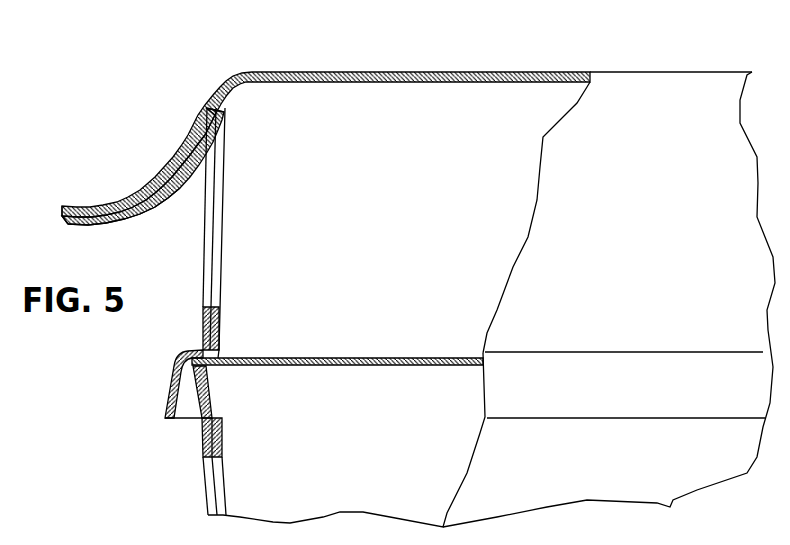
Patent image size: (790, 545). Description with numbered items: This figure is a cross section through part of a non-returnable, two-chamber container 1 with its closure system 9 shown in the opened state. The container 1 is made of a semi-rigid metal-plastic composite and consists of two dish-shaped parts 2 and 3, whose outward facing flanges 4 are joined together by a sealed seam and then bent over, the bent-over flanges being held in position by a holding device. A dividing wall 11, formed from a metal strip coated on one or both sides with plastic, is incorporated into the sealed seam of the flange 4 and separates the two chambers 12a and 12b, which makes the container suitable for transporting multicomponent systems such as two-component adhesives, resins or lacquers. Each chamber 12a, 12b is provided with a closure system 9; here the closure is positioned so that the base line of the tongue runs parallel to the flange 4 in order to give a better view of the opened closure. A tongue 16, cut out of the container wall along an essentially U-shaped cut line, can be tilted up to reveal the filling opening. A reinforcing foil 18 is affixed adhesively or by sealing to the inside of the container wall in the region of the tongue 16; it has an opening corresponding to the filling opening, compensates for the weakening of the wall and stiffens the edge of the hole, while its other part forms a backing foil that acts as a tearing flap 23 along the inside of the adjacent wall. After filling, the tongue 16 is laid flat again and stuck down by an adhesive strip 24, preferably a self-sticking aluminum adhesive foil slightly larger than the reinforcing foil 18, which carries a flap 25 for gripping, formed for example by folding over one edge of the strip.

The non-returnable container 1 is at (229, 64).
The dish-shaped part 2 is at (330, 72).
The dish-shaped part 3 is at (200, 430).
The flange 4 is at (636, 405).
The closure system 9 is at (186, 140).
The dividing wall 11 is at (400, 358).
The chamber 12a is at (462, 108).
The chamber 12b is at (362, 473).
The tongue 16 is at (131, 216).
The reinforcing foil 18 is at (219, 326).
The tearing flap 23 is at (200, 172).
The adhesive strip 24 is at (157, 184).
The flap for gripping 25 is at (74, 195).